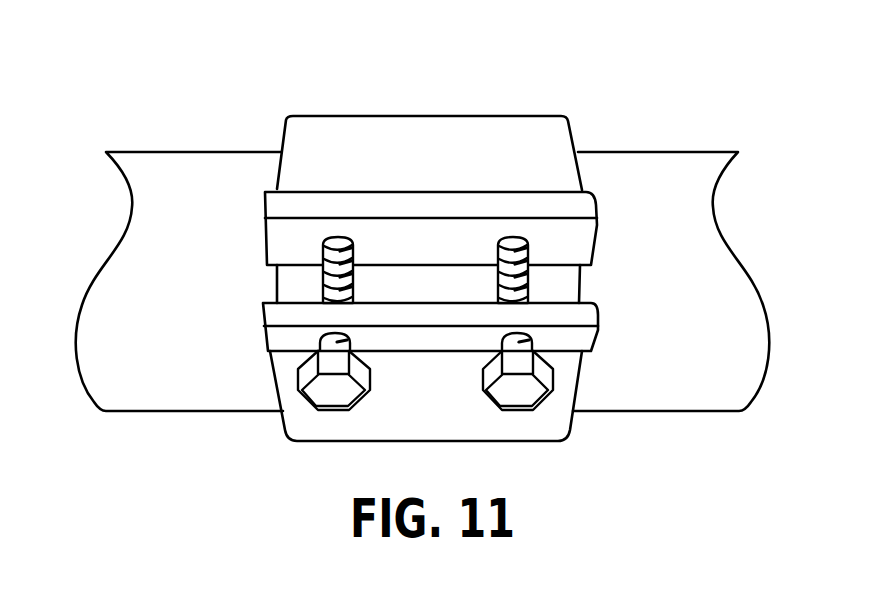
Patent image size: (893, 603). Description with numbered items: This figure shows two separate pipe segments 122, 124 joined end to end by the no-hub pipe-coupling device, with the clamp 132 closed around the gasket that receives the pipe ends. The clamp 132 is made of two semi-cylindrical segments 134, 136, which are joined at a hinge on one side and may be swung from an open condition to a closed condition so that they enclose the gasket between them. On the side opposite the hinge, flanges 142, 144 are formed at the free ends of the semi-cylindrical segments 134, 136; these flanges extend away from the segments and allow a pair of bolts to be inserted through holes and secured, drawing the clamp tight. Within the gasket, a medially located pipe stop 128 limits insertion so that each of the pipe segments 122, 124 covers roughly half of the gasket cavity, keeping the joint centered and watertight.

The pipe segment 122 is at (697, 152).
The pipe segment 124 is at (195, 152).
The pipe stop 128 is at (570, 281).
The clamp 132 is at (489, 84).
The semi-cylindrical segment 134 is at (550, 442).
The semi-cylindrical segment 136 is at (545, 116).
The flange 142 is at (260, 312).
The flange 144 is at (263, 200).